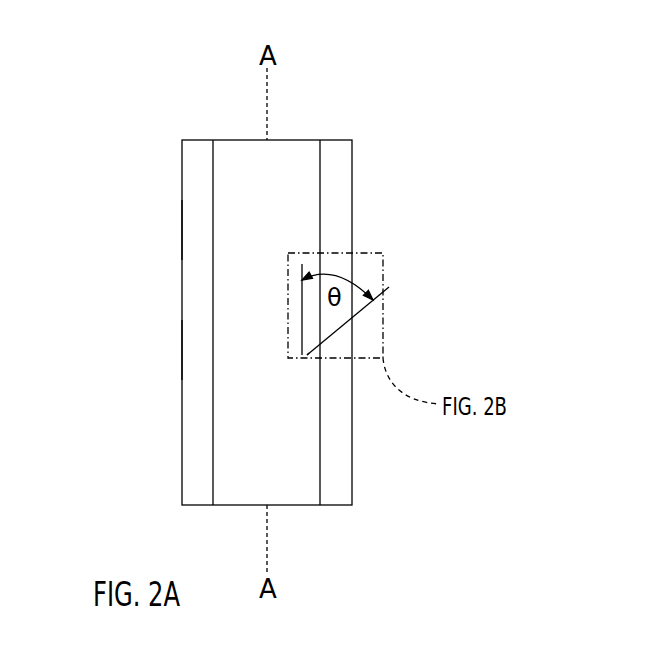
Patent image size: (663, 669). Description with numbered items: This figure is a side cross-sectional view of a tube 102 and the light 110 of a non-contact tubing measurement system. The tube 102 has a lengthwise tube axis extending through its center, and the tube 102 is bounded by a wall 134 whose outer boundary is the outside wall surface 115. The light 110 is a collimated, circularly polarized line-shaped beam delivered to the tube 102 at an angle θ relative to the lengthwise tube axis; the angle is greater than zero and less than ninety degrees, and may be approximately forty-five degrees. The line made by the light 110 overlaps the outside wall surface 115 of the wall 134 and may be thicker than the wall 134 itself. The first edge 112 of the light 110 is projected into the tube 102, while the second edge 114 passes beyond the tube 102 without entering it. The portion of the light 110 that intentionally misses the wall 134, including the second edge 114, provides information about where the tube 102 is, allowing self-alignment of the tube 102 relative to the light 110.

The tube 102 is at (305, 193).
The wall 134 is at (202, 220).
The outside wall surface 115 is at (182, 350).
The second edge 114 is at (388, 290).
The light 110 is at (369, 310).
The first edge 112 is at (307, 355).